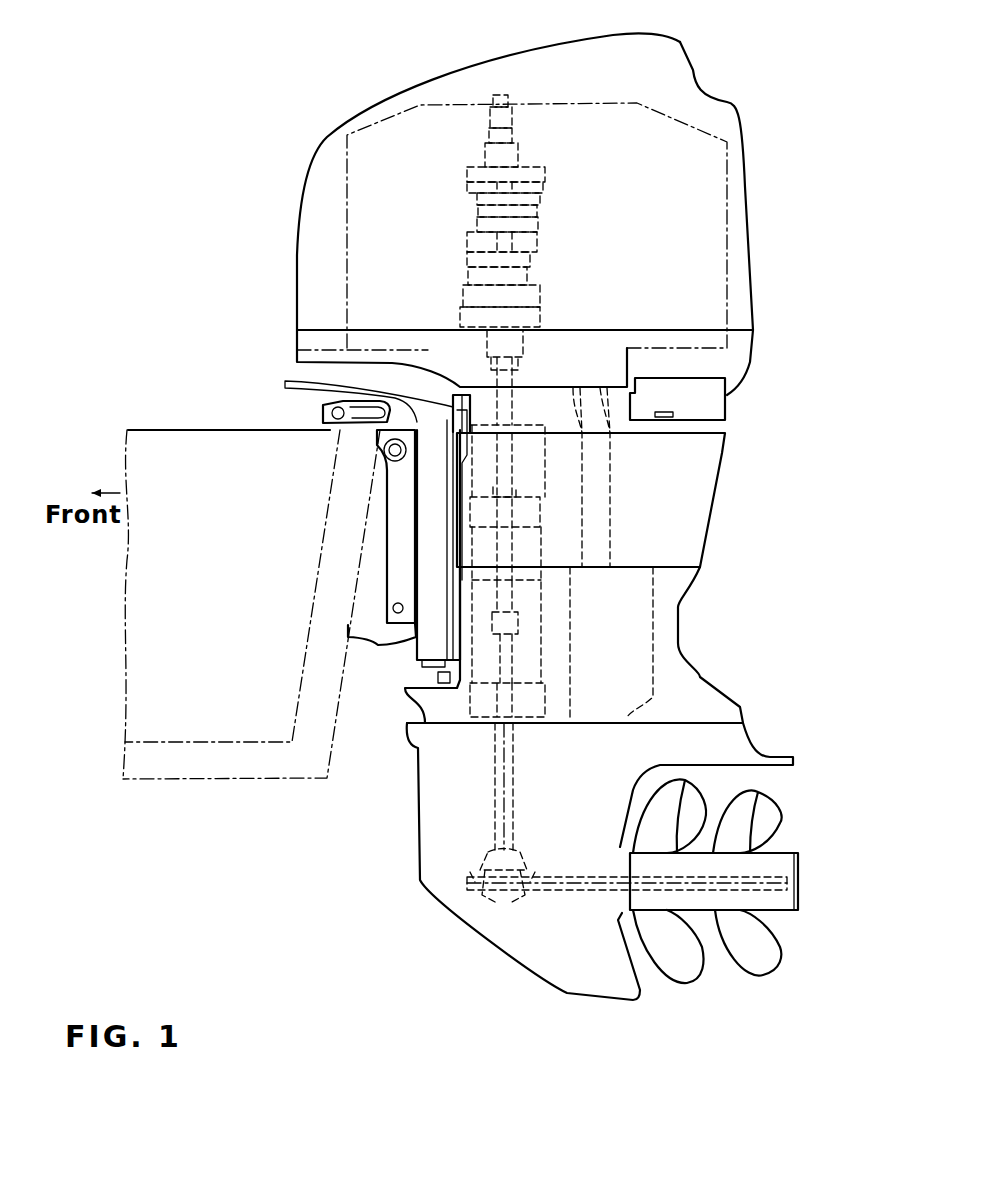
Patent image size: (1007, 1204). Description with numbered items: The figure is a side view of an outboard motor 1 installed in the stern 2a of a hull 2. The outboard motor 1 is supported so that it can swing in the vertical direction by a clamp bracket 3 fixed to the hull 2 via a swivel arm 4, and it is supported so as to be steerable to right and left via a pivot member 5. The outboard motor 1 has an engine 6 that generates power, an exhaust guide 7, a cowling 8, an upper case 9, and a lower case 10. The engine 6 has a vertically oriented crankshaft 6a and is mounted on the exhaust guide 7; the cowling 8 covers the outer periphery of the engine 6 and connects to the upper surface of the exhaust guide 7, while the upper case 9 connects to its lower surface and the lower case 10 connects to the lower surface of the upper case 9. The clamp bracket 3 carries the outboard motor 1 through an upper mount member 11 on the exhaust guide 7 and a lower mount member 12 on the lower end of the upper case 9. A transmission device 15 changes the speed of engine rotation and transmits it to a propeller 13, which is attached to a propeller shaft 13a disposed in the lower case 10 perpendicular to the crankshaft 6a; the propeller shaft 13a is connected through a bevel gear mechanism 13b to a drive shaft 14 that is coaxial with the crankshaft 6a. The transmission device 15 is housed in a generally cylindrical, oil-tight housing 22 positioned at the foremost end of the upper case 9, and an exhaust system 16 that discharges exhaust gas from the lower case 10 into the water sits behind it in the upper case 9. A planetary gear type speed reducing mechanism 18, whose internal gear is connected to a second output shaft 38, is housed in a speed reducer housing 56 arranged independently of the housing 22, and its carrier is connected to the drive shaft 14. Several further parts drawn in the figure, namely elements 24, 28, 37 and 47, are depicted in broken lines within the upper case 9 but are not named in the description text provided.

The outboard motor 1 is at (278, 167).
The hull 2 is at (167, 428).
The stern 2a is at (337, 713).
The clamp bracket 3 is at (362, 537).
The swivel arm 4 is at (380, 425).
The pivot member 5 is at (417, 570).
The engine 6 is at (345, 168).
The crankshaft 6a is at (528, 292).
The exhaust guide 7 is at (632, 405).
The cowling 8 is at (743, 147).
The upper case 9 is at (717, 498).
The lower case 10 is at (757, 745).
The upper mount member 11 is at (463, 415).
The lower mount member 12 is at (452, 622).
The propeller 13 is at (788, 820).
The propeller shaft 13a is at (598, 893).
The bevel gear mechanism 13b is at (533, 853).
The drive shaft 14 is at (518, 780).
The transmission device 15 is at (548, 487).
The exhaust system 16 is at (617, 525).
The planetary gear type speed reducing mechanism 18 is at (545, 703).
The housing 22 is at (545, 550).
The exhaust guide 24 is at (513, 405).
The exhaust pipe 28 is at (513, 530).
The oil strainer 37 is at (517, 605).
The second output shaft 38 is at (512, 667).
The drive shaft housing passage 47 is at (531, 483).
The speed reducer housing 56 is at (477, 697).